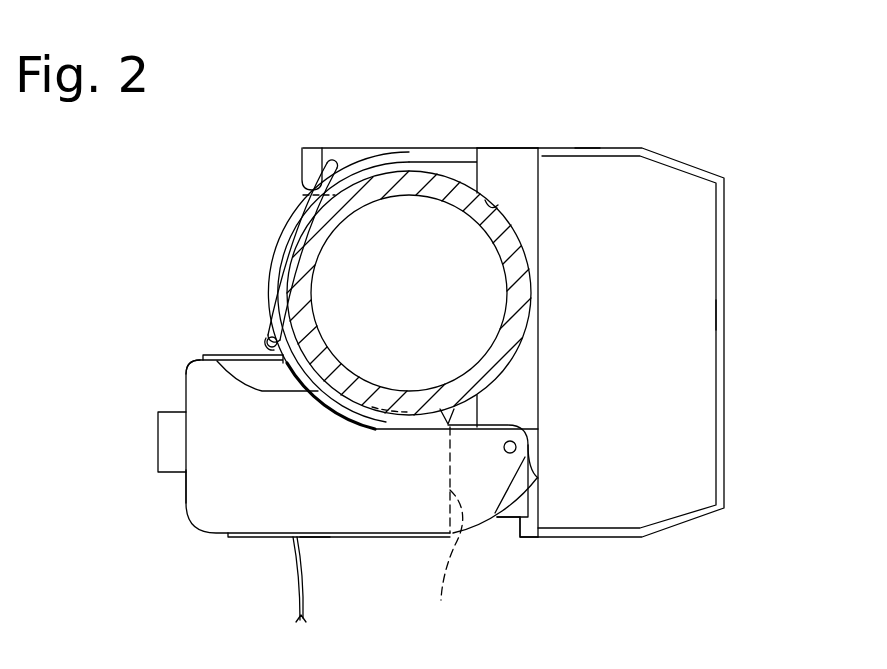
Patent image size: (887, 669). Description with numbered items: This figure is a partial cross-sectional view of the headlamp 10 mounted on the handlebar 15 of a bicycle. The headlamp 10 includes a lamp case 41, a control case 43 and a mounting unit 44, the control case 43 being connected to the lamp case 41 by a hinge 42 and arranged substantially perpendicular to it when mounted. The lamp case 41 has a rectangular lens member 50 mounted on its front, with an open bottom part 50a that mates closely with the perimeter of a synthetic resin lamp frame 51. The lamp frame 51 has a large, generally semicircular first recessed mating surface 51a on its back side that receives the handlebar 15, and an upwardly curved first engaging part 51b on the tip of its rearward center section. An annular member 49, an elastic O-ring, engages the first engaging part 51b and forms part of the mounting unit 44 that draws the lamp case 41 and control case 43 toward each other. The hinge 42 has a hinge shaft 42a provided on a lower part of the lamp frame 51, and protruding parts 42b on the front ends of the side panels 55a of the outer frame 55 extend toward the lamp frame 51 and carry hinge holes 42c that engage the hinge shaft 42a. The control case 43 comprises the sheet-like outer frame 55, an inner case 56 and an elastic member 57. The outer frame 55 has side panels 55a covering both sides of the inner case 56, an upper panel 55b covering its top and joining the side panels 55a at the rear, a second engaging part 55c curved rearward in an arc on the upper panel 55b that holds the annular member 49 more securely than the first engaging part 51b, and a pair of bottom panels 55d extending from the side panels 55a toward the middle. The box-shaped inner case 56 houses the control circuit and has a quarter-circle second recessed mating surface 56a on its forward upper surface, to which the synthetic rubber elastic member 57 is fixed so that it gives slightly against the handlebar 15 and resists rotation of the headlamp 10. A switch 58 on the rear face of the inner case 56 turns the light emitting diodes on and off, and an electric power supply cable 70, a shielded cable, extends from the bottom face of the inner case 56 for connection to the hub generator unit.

The headlamp 10 is at (580, 105).
The handlebar 15 is at (388, 183).
The lamp case 41 is at (727, 330).
The hinge 42 is at (510, 468).
The hinge shaft 42a is at (537, 478).
The protruding parts 42b is at (480, 512).
The hinge holes 42c is at (511, 440).
The control case 43 is at (333, 542).
The mounting unit 44 is at (274, 268).
The annular member 49 is at (290, 242).
The lens member 50 is at (708, 268).
The open bottom part 50a is at (520, 540).
The lamp frame 51 is at (495, 148).
The first recessed mating surface 51a is at (486, 204).
The first engaging part 51b is at (316, 152).
The outer frame 55 is at (270, 508).
The side panels 55a is at (247, 478).
The upper panel 55b is at (245, 352).
The second engaging part 55c is at (266, 332).
The bottom panels 55d is at (367, 539).
The inner case 56 is at (441, 533).
The second recessed mating surface 56a is at (348, 410).
The elastic member 57 is at (204, 354).
The switch 58 is at (158, 457).
The electric power supply cable 70 is at (297, 592).